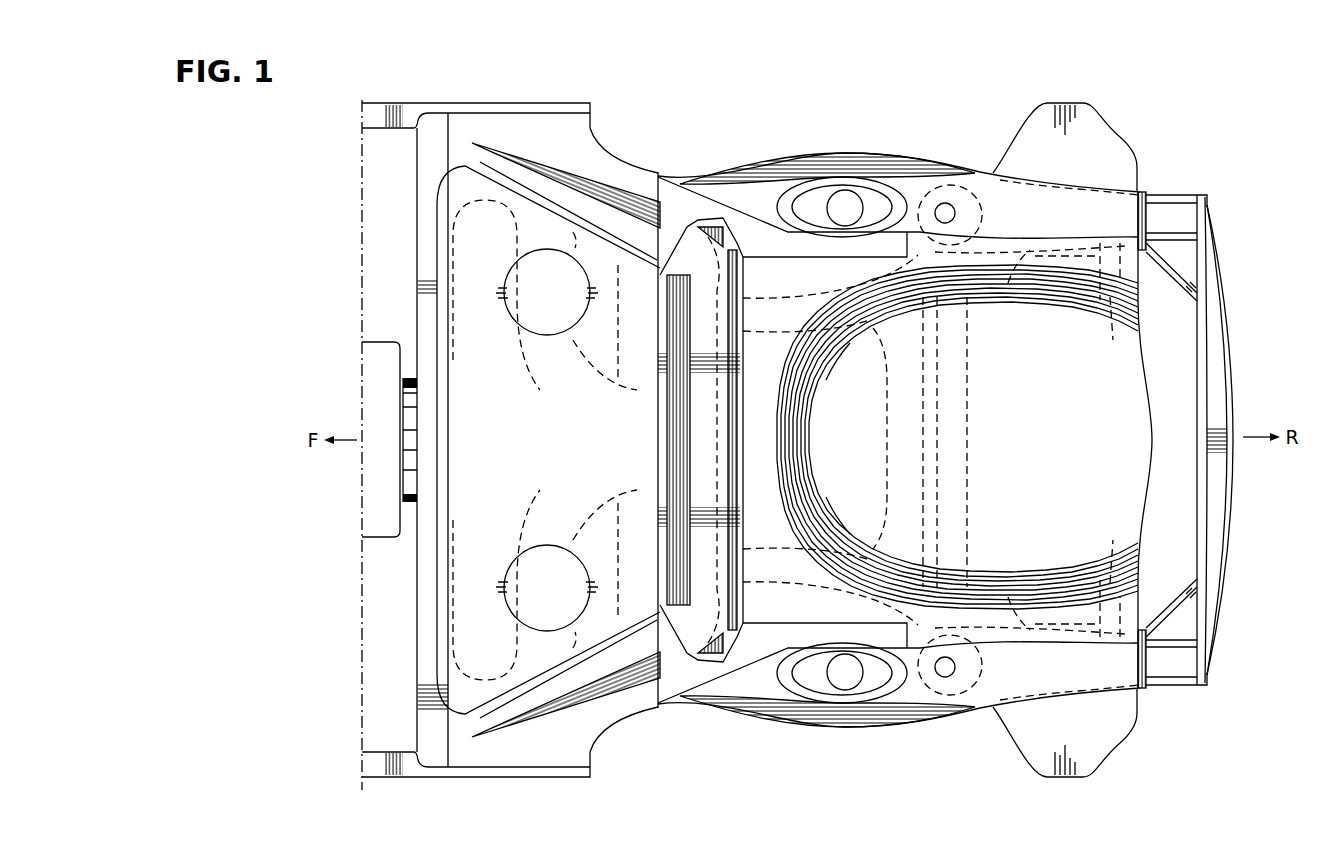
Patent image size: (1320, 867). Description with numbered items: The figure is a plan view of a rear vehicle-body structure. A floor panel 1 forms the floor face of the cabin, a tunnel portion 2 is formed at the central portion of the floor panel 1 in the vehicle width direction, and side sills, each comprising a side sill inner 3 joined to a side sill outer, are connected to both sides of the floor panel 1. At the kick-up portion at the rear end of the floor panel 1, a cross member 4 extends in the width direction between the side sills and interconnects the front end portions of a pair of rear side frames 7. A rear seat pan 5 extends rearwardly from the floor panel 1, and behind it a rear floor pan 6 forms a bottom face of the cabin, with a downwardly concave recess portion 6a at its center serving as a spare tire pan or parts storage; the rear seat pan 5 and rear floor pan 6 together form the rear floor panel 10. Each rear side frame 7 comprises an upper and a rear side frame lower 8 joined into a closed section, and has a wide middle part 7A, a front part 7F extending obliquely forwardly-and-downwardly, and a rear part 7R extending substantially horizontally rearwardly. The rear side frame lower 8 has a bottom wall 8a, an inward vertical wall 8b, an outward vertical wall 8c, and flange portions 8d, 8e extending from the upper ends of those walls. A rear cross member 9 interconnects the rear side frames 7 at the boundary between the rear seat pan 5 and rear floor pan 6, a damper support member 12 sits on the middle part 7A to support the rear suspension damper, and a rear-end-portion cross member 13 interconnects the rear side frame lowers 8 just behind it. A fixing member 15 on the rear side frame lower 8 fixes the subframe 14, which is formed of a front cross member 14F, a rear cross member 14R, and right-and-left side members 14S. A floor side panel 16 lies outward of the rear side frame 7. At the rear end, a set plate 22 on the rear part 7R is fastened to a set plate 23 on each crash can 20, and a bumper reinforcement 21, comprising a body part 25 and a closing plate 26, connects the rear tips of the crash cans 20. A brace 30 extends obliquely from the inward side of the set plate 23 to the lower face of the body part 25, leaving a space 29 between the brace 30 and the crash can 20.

The floor panel 1 is at (362, 313).
The tunnel portion 2 is at (407, 408).
The side sill inner 3 is at (378, 105).
The cross member 4 is at (425, 555).
The rear seat pan 5 is at (474, 352).
The rear floor pan 6 is at (757, 382).
The recess portion 6a is at (1015, 436).
The rear side frame 7 is at (877, 146).
The middle part 7A is at (803, 158).
The front part 7F is at (550, 130).
The rear part 7R is at (1062, 178).
The rear side frame lower 8 is at (1062, 262).
The bottom wall 8a is at (1013, 262).
The vertical wall 8b is at (1100, 248).
The vertical wall 8c is at (1098, 203).
The flange portion 8d is at (1112, 300).
The flange portion 8e is at (1022, 177).
The rear cross member 9 is at (733, 484).
The rear floor panel 10 is at (462, 583).
The damper support member 12 is at (839, 184).
The rear-end-portion cross member 13 is at (967, 478).
The subframe 14 is at (934, 394).
The front cross member 14F is at (658, 443).
The rear cross member 14R is at (885, 438).
The side member 14S is at (848, 360).
The fixing member 15 is at (955, 215).
The floor side panel 16 is at (1090, 118).
The crash can 20 is at (1185, 195).
The bumper reinforcement 21 is at (1248, 379).
The set plate 22 is at (1134, 223).
The set plate 23 is at (1150, 190).
The body part 25 is at (1203, 427).
The closing plate 26 is at (1233, 477).
The space 29 is at (1187, 252).
The brace 30 is at (1175, 278).